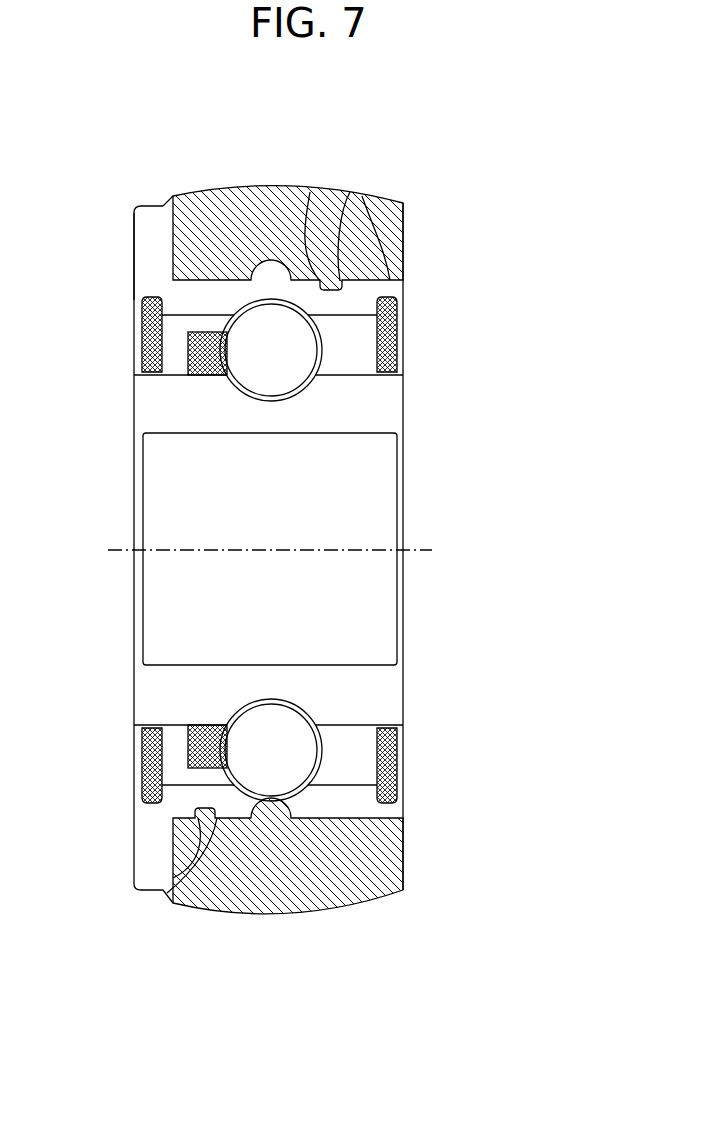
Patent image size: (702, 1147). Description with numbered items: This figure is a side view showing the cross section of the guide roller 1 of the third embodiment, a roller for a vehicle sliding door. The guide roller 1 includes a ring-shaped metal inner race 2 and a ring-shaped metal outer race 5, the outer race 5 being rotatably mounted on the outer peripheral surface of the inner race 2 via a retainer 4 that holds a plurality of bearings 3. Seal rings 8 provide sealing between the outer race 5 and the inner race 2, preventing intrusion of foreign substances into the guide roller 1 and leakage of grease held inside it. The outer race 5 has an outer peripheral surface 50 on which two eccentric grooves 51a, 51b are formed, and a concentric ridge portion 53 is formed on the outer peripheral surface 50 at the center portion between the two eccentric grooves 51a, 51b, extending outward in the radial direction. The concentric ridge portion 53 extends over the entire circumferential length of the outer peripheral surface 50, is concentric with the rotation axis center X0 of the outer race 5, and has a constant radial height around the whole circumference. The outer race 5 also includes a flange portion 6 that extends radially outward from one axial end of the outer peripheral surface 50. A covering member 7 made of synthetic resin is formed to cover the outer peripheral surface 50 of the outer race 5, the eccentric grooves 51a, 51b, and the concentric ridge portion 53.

The guide roller 1 is at (403, 187).
The inner race 2 is at (390, 417).
The bearings 3 is at (303, 355).
The retainer 4 is at (187, 362).
The outer race 5 is at (357, 293).
The flange portion 6 is at (157, 268).
The covering member 7 is at (402, 242).
The seal rings 8 is at (142, 302).
The outer peripheral surface 50 is at (348, 191).
The eccentric groove 51a is at (383, 191).
The eccentric groove 51b is at (167, 900).
The concentric ridge portion 53 is at (310, 191).
The rotation axis center X0 is at (417, 547).